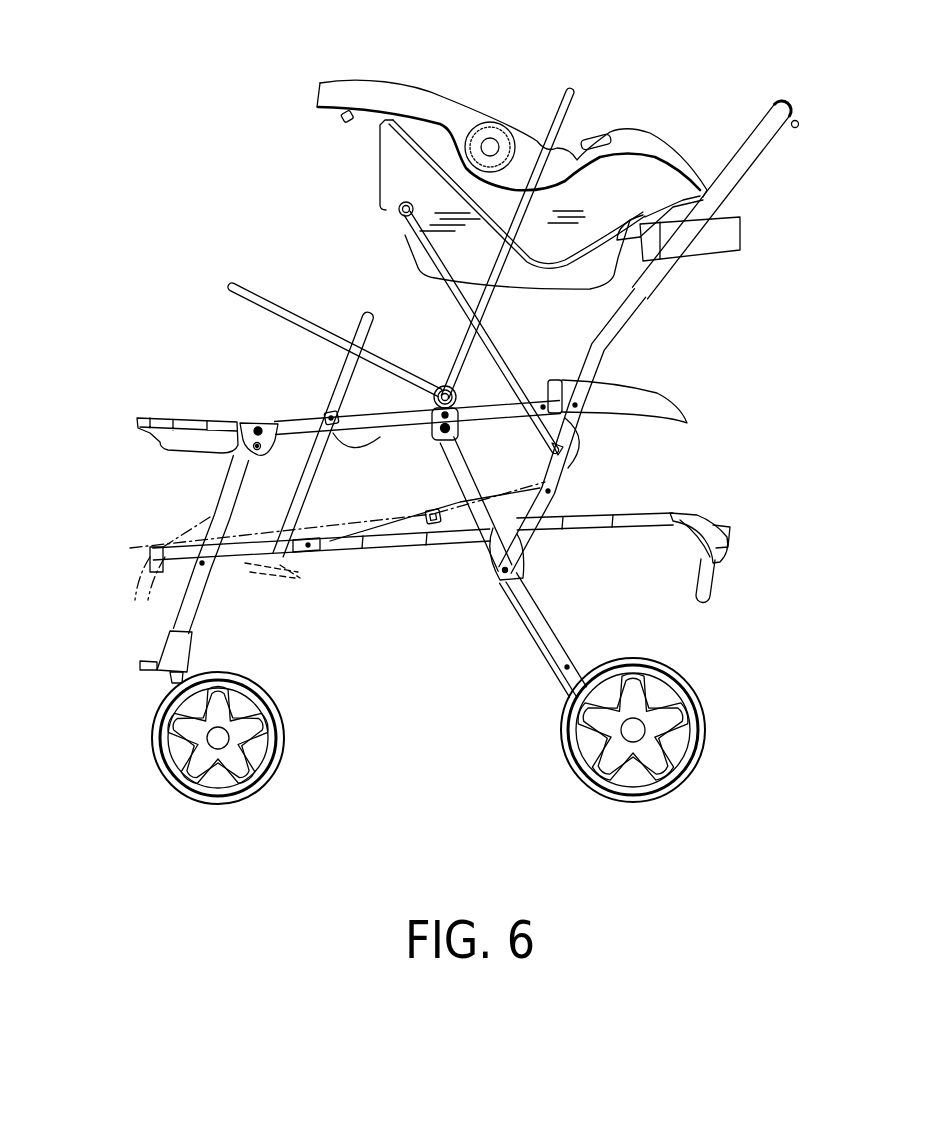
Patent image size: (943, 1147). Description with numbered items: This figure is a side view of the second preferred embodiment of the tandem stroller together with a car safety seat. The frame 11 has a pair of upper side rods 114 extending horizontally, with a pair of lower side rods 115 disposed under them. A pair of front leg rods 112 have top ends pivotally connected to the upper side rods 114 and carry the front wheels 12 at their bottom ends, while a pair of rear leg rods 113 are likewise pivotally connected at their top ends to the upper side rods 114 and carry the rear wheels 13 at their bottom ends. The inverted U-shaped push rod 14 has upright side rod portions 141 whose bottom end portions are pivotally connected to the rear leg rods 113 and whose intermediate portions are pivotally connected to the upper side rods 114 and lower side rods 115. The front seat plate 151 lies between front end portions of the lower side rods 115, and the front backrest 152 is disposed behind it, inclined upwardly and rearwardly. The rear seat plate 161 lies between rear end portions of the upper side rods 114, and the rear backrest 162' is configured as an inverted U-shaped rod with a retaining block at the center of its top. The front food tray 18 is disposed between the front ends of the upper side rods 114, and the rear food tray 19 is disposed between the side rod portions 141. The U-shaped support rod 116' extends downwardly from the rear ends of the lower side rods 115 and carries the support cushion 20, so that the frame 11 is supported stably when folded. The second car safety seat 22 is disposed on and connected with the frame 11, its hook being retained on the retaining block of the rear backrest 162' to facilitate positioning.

The frame 11 is at (215, 237).
The front wheels 12 is at (287, 742).
The rear wheels 13 is at (573, 770).
The push rod 14 is at (750, 93).
The side rod portions 141 is at (732, 213).
The rear food tray 19 is at (700, 240).
The rear seat plate 161 is at (658, 393).
The rear backrest 162' is at (433, 270).
The front food tray 18 is at (140, 423).
The upper side rods 114 is at (413, 420).
The front backrest 152 is at (307, 500).
The front seat plate 151 is at (172, 562).
The front leg rods 112 is at (185, 617).
The rear leg rods 113 is at (537, 628).
The lower side rods 115 is at (427, 545).
The support rod 116' is at (749, 609).
The support cushion 20 is at (728, 535).
The second car safety seat 22 is at (460, 118).